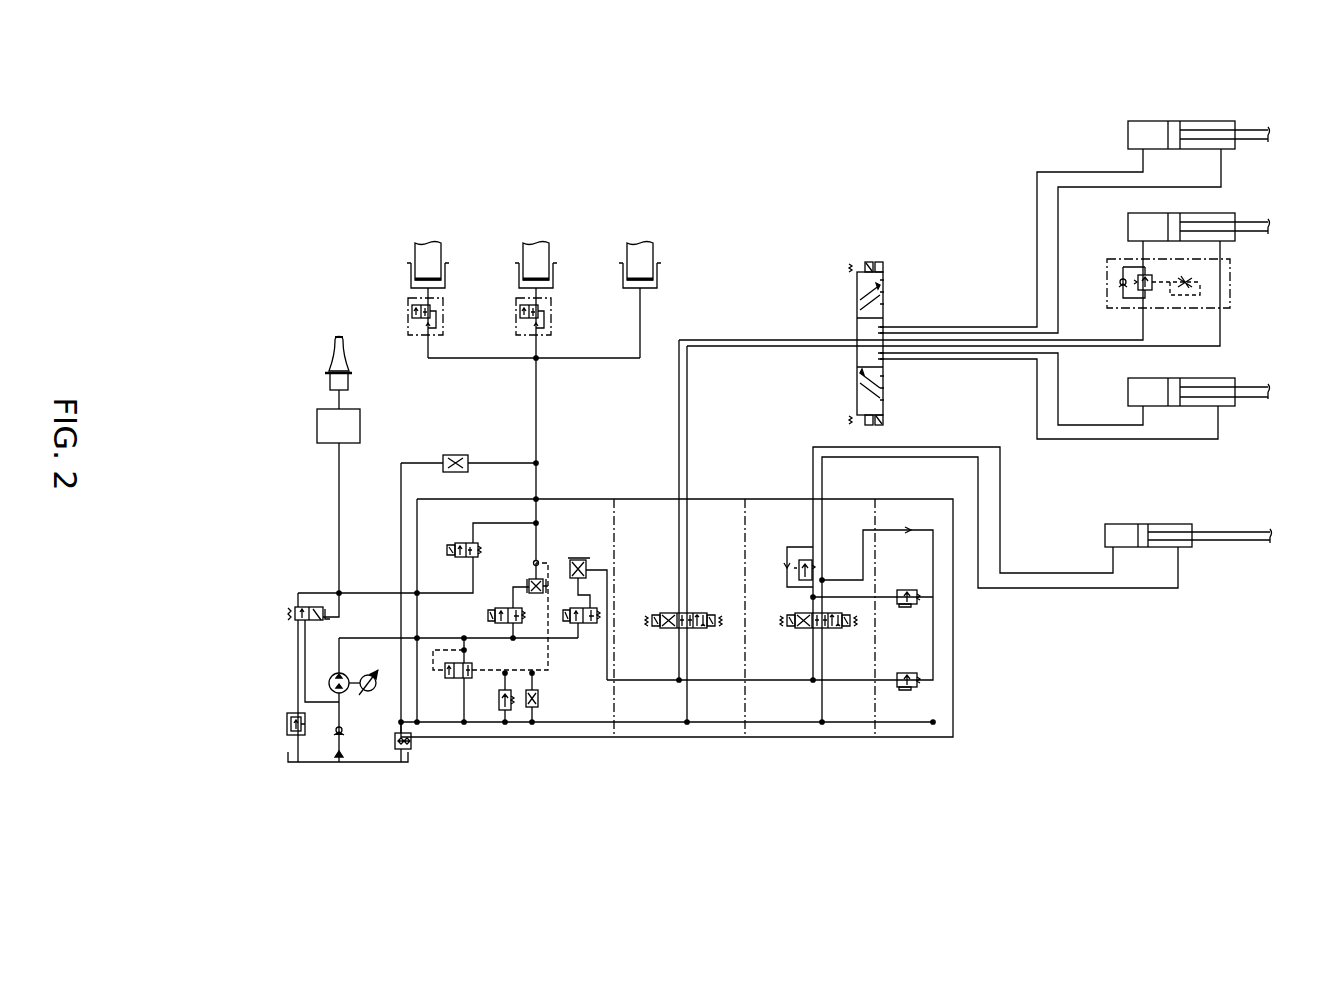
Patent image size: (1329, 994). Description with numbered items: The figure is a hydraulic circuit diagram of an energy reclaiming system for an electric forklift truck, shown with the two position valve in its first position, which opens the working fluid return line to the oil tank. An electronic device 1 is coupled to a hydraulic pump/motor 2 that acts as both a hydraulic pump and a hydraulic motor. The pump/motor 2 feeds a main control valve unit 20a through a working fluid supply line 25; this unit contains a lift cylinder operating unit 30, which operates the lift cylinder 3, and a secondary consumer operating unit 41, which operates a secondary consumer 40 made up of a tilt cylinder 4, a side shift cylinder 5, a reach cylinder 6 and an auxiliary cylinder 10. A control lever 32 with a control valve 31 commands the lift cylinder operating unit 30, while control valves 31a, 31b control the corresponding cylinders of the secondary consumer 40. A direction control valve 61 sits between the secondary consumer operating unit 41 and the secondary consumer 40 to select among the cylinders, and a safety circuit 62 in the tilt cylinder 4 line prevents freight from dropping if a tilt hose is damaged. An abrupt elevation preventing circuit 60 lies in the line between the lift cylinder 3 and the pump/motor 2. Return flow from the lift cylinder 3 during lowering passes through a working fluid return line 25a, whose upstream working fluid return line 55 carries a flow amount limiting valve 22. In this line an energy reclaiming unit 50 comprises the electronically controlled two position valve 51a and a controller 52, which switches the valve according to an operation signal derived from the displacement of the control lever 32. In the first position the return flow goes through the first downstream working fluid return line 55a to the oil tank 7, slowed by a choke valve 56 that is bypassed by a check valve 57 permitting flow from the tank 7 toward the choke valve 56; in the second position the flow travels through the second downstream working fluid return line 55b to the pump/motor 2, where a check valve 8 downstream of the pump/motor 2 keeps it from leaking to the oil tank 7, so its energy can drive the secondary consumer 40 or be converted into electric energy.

The electronic device 1 is at (370, 696).
The hydraulic pump/motor 2 is at (327, 683).
The lift cylinder 3 is at (539, 232).
The tilt cylinder 4 is at (1231, 208).
The side shift cylinder 5 is at (1226, 116).
The reach cylinder 6 is at (1195, 520).
The oil tank 7 is at (340, 769).
The check valve 8 is at (335, 738).
The auxiliary cylinder 10 is at (1240, 374).
The main control valve unit 20a is at (958, 690).
The flow amount limiting valve 22 is at (454, 545).
The working fluid supply line 25 is at (444, 636).
The working fluid return line 25a is at (441, 588).
The lift cylinder operating unit 30 is at (502, 580).
The control valve 31 is at (509, 605).
The control valve 31a is at (700, 610).
The control valve 31b is at (834, 632).
The control lever 32 is at (328, 360).
The secondary consumer 40 is at (1198, 232).
The secondary consumer operating unit 41 is at (892, 575).
The energy reclaiming unit 50 is at (266, 474).
The two position valve 51a is at (291, 604).
The controller 52 is at (315, 427).
The upstream working fluid return line 55 is at (365, 592).
The first downstream working fluid return line 55a is at (298, 665).
The second downstream working fluid return line 55b is at (305, 642).
The choke valve 56 is at (320, 737).
The check valve 57 is at (288, 724).
The abrupt elevation preventing circuit 60 is at (558, 320).
The direction control valve 61 is at (867, 260).
The safety circuit 62 is at (1235, 285).